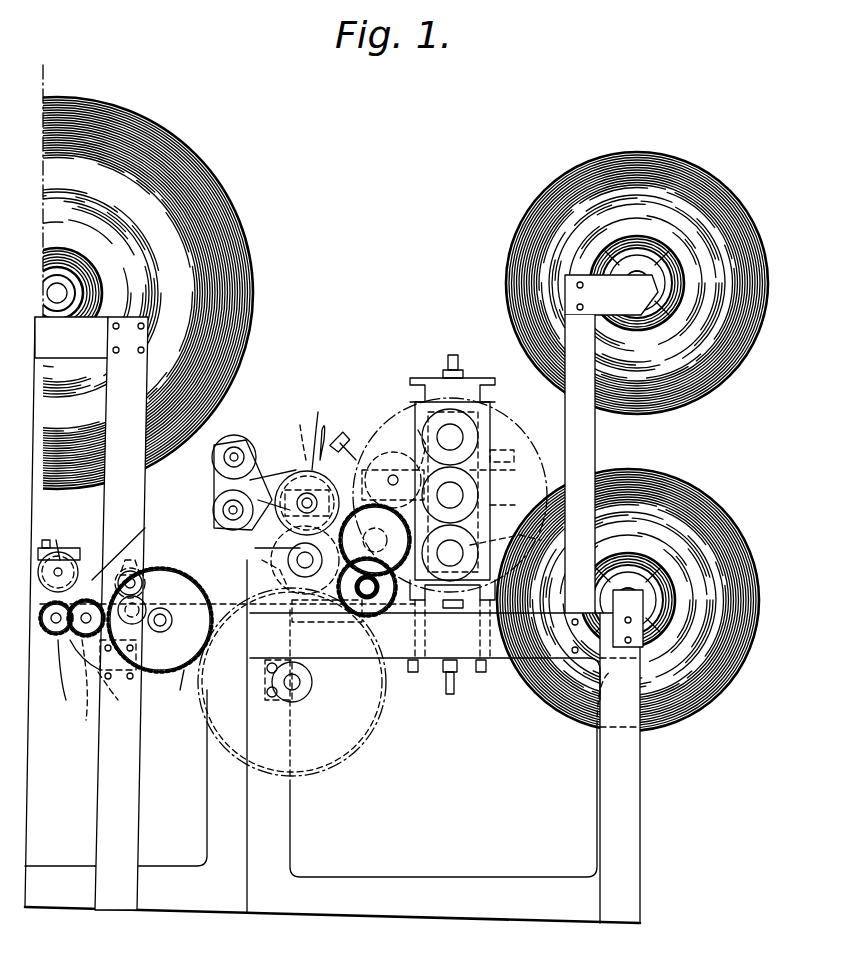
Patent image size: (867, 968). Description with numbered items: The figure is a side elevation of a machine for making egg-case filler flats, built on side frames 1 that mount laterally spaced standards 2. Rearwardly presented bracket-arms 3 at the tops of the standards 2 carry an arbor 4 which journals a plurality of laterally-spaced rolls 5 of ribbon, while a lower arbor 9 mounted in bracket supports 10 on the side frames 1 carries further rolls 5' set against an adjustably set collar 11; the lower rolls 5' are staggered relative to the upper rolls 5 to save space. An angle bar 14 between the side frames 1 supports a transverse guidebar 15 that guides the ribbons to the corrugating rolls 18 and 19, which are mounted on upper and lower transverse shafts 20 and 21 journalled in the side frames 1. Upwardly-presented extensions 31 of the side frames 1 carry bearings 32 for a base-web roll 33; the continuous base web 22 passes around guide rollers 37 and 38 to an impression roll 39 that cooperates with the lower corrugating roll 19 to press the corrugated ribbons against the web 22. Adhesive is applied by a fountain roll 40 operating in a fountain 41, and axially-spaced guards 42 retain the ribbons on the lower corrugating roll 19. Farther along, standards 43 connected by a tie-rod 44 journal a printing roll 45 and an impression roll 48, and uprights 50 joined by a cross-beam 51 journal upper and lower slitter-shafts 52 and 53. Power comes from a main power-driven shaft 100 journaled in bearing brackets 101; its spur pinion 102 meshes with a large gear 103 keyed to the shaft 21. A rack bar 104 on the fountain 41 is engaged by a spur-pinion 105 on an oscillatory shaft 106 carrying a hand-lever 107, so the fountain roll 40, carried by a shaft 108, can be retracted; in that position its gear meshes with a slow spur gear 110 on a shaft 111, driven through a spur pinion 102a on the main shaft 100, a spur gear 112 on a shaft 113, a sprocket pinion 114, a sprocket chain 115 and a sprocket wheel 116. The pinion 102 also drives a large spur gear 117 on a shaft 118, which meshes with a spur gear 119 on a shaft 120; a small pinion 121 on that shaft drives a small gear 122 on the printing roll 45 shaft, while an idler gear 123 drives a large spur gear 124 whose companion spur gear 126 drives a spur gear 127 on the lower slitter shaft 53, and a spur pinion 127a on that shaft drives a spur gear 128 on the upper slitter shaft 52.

The side frame 1 is at (273, 836).
The standard 2 is at (597, 460).
The bracket-arm 3 is at (611, 295).
The arbor 4 is at (638, 271).
The roll of ribbon 5 is at (628, 381).
The roll of ribbon 5' is at (632, 600).
The lower arbor 9 is at (630, 592).
The bracket support 10 is at (628, 650).
The adjustably set collar 11 is at (646, 600).
The angle bar 14 is at (505, 473).
The guidebar 15 is at (512, 458).
The upper corrugating roll 18 is at (495, 418).
The lower corrugating roll 19 is at (493, 506).
The upper transverse shaft 20 is at (440, 432).
The lower transverse shaft 21 is at (450, 495).
The base web 22 is at (227, 593).
The upwardly-presented extension 31 is at (121, 613).
The bearing 32 is at (66, 305).
The base-web roll 33 is at (156, 157).
The guide roller 37 is at (232, 444).
The guide roller 38 is at (213, 511).
The impression roll 39 is at (520, 545).
The fountain roll 40 is at (392, 472).
The fountain 41 is at (375, 540).
The guard 42 is at (420, 540).
The standard 43 is at (140, 575).
The tie-rod 44 is at (128, 560).
The printing roll 45 is at (160, 620).
The impression roll 48 is at (150, 582).
The upright 50 is at (118, 539).
The cross-beam 51 is at (62, 550).
The upper slitter-shaft 52 is at (70, 574).
The lower slitter-shaft 53 is at (58, 636).
The main power-driven shaft 100 is at (362, 598).
The bearing bracket 101 is at (412, 672).
The spur pinion 102 is at (320, 660).
The spur pinion 102a is at (323, 623).
The large gear 103 is at (448, 604).
The rack bar 104 is at (305, 480).
The spur-pinion 105 is at (278, 548).
The oscillatory shaft 106 is at (386, 490).
The hand-lever 107 is at (324, 420).
The shaft 108 is at (418, 445).
The spur gear 110 is at (344, 432).
The shaft 111 is at (262, 515).
The spur gear 112 is at (305, 578).
The shaft 113 is at (280, 585).
The sprocket pinion 114 is at (268, 566).
The sprocket chain 115 is at (306, 445).
The sprocket wheel 116 is at (318, 412).
The large spur gear 117 is at (362, 752).
The shaft 118 is at (298, 690).
The spur gear 119 is at (182, 690).
The shaft 120 is at (168, 621).
The small pinion 121 is at (146, 606).
The small gear 122 is at (118, 672).
The idler gear 123 is at (88, 636).
The large spur gear 124 is at (64, 710).
The spur gear 126 is at (86, 722).
The spur gear 127 is at (90, 705).
The spur pinion 127a is at (123, 709).
The spur gear 128 is at (56, 540).